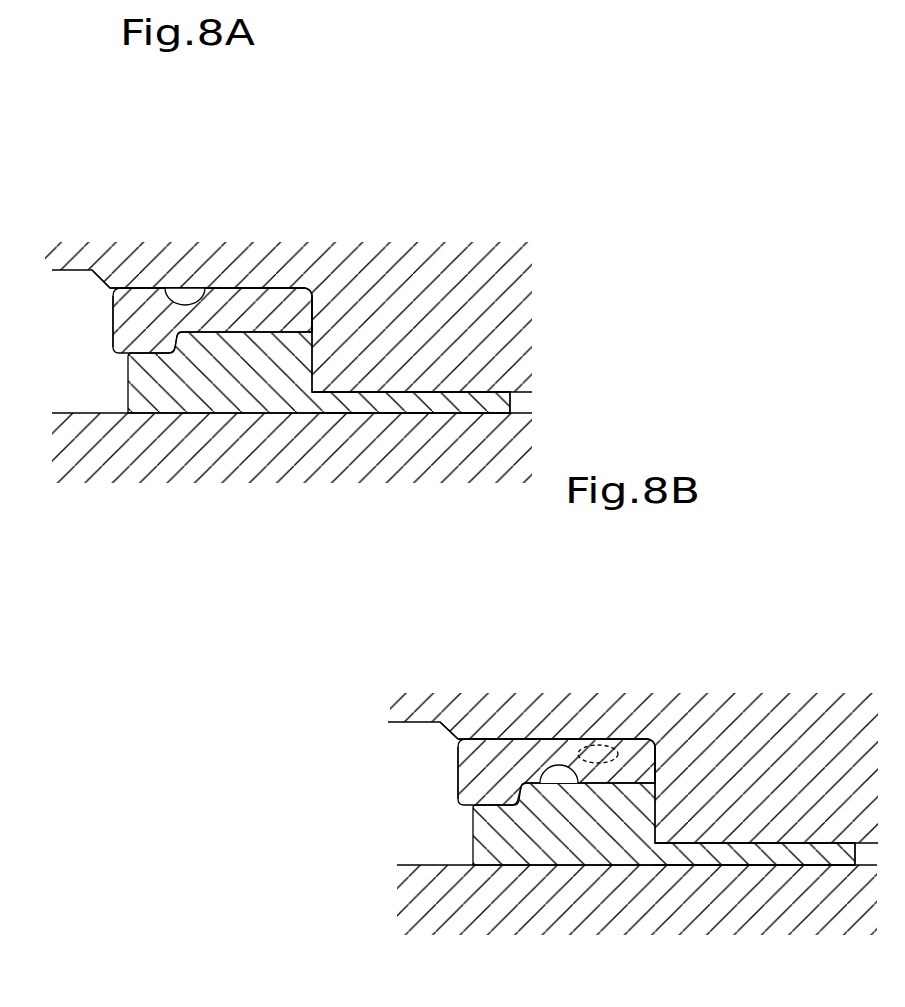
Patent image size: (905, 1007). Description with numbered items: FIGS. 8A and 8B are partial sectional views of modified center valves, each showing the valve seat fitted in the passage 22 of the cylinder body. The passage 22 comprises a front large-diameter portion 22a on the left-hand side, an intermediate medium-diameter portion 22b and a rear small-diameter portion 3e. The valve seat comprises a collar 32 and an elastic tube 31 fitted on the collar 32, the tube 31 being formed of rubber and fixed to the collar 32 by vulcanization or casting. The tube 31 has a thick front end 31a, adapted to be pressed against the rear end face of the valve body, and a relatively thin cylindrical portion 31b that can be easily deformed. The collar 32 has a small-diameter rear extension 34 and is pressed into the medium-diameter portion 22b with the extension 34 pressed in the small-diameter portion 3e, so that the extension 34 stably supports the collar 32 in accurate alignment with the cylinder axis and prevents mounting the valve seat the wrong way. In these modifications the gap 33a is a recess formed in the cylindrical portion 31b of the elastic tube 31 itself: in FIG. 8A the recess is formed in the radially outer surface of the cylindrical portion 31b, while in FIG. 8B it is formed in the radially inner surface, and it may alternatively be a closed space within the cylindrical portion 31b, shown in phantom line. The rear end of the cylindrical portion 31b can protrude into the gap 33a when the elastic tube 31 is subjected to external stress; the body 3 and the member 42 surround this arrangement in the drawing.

In FIG. 8A, the body 3 is at (147, 270).
In FIG. 8B, the body 3 is at (493, 722).
In FIG. 8A, the rear small-diameter portion 3e is at (371, 410).
In FIG. 8B, the rear small-diameter portion 3e is at (703, 863).
In FIG. 8A, the passage 22 is at (103, 362).
In FIG. 8B, the passage 22 is at (460, 813).
In FIG. 8A, the front large-diameter portion 22a is at (63, 278).
In FIG. 8B, the front large-diameter portion 22a is at (410, 730).
In FIG. 8A, the intermediate medium-diameter portion 22b is at (270, 290).
In FIG. 8B, the intermediate medium-diameter portion 22b is at (569, 742).
In FIG. 8A, the elastic tube 31 is at (223, 288).
In FIG. 8B, the elastic tube 31 is at (530, 735).
In FIG. 8A, the front end 31a is at (92, 310).
In FIG. 8B, the front end 31a is at (438, 775).
In FIG. 8A, the cylindrical portion 31b is at (295, 310).
In FIG. 8B, the cylindrical portion 31b is at (640, 763).
In FIG. 8A, the collar 32 is at (255, 395).
In FIG. 8B, the collar 32 is at (597, 845).
In FIG. 8A, the gap 33a is at (188, 300).
In FIG. 8B, the gap 33a is at (560, 772).
In FIG. 8A, the rear extension 34 is at (492, 403).
In FIG. 8B, the rear extension 34 is at (735, 855).
In FIG. 8A, the base plate 42 is at (99, 453).
In FIG. 8B, the base plate 42 is at (448, 905).